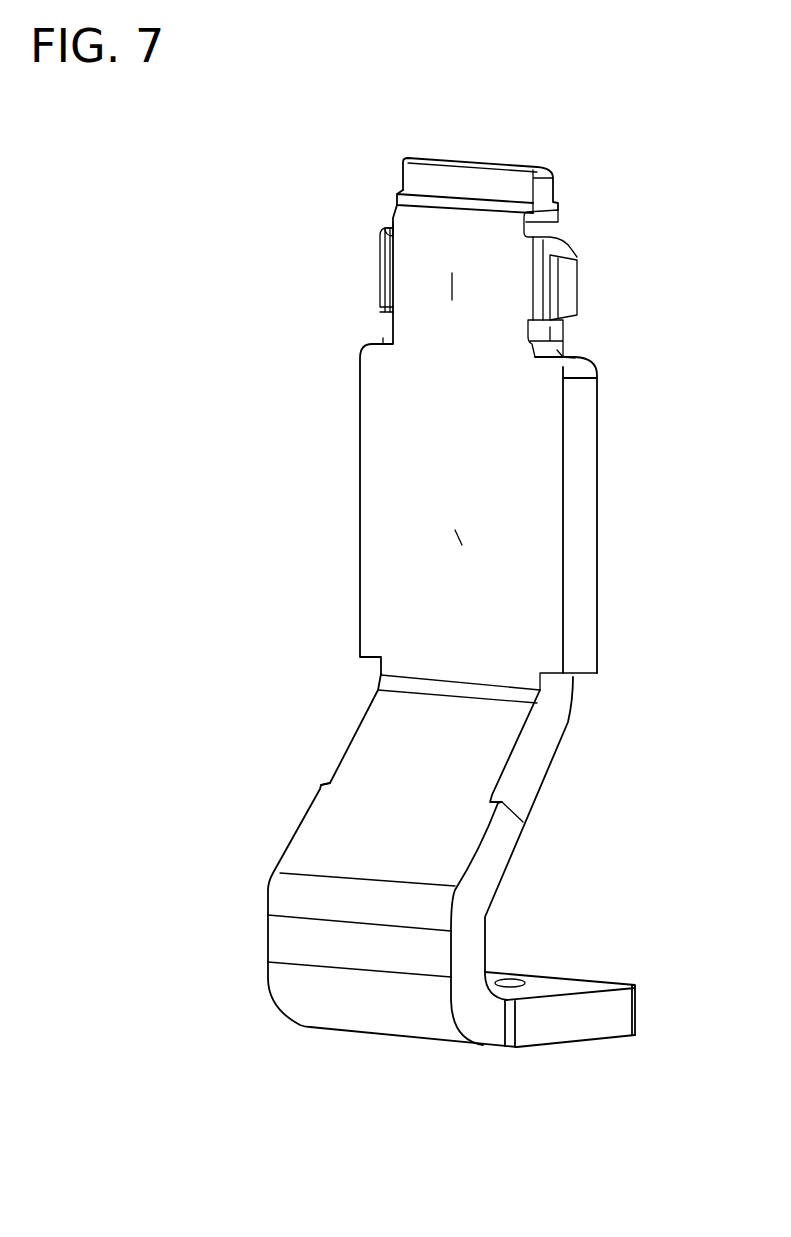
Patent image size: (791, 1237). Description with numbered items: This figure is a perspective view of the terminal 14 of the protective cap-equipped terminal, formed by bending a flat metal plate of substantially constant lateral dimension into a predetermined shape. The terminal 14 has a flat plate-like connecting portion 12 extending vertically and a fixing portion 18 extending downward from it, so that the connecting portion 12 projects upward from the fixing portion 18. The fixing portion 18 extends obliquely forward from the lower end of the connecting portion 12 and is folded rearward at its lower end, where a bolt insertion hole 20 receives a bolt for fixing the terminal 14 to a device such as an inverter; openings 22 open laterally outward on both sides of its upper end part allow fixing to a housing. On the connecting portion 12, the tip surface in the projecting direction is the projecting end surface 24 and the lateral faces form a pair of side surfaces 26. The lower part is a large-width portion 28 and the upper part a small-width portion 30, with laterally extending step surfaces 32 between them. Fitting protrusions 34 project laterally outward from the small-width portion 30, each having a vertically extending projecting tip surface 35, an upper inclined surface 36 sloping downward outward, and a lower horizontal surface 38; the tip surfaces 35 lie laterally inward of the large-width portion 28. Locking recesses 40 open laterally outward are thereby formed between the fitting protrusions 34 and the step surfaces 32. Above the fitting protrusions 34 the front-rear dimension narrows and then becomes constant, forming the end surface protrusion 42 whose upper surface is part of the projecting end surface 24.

The connecting portion 12 is at (292, 412).
The terminal 14 is at (604, 144).
The fixing portion 18 is at (312, 942).
The bolt insertion hole 20 is at (498, 982).
The opening 22 is at (321, 783).
The projecting end surface 24 is at (497, 159).
The side surface 26 is at (593, 549).
The large-width portion 28 is at (462, 545).
The small-width portion 30 is at (452, 300).
The step surface 32 is at (570, 348).
The fitting protrusion 34 is at (380, 260).
The projecting tip surface 35 is at (570, 285).
The inclined surface 36 is at (385, 235).
The horizontal surface 38 is at (378, 312).
The locking recess 40 is at (383, 339).
The end surface protrusion 42 is at (456, 177).